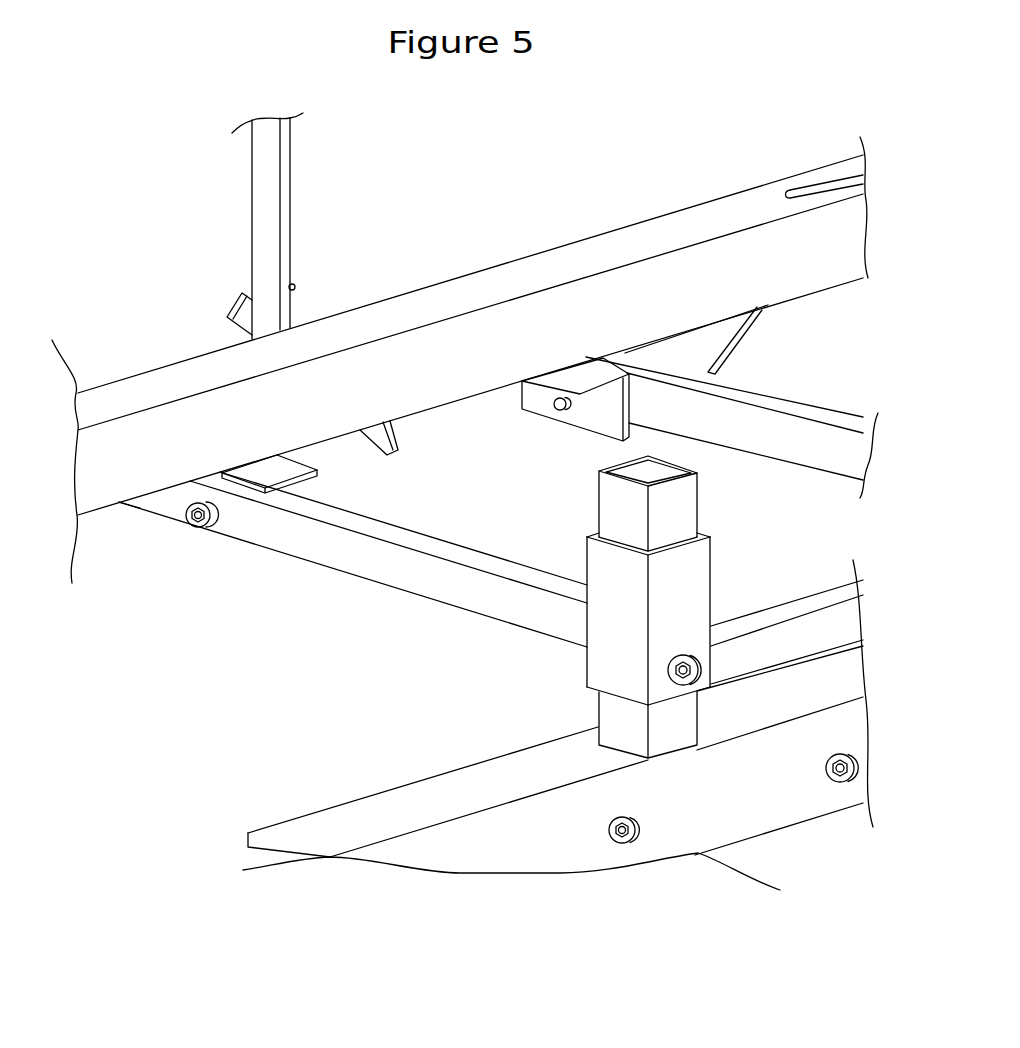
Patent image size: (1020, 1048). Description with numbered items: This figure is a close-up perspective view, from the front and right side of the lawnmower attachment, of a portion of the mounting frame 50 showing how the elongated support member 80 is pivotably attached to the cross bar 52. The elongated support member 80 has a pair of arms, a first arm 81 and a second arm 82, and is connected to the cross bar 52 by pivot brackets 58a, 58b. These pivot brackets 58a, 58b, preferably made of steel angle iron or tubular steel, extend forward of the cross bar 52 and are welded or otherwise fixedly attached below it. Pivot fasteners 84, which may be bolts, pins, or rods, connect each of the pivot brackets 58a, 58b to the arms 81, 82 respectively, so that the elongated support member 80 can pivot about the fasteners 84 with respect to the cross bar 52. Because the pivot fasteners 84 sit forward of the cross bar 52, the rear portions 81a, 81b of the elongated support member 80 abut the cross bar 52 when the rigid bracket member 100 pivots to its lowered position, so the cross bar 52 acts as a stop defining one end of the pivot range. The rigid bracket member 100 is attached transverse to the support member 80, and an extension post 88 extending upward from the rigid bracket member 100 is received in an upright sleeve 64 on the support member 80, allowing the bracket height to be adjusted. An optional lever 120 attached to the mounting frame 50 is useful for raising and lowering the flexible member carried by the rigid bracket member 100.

The mounting frame 50 is at (460, 360).
The cross bar 52 is at (594, 250).
The lever 120 is at (268, 232).
The elongated support member 80 is at (483, 503).
The first arm 81 is at (815, 435).
The rear portion 81a is at (140, 500).
The rear portion 81b is at (634, 352).
The second arm 82 is at (512, 595).
The pivot fastener 84 is at (193, 523).
The pivot bracket 58a is at (283, 467).
The pivot bracket 58b is at (527, 402).
The extension post 88 is at (682, 503).
The upright sleeve 64 is at (688, 603).
The rigid bracket member 100 is at (337, 830).